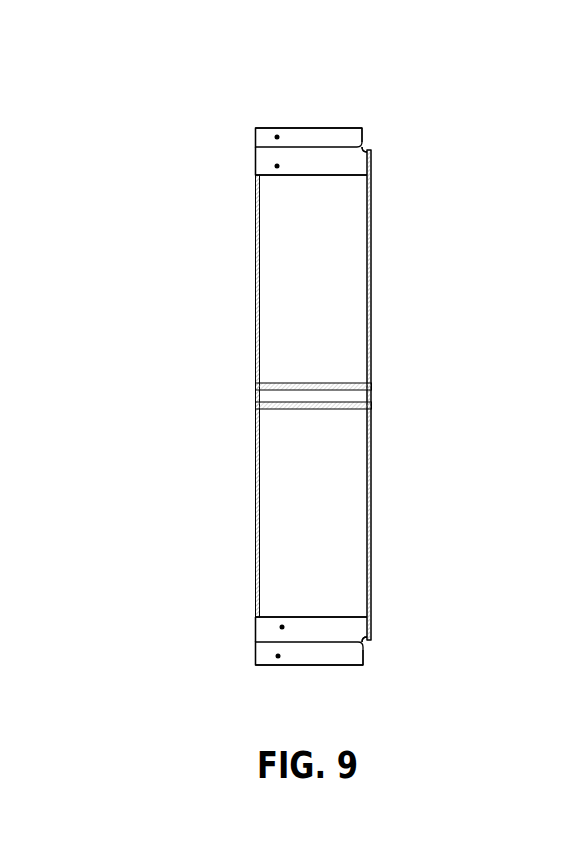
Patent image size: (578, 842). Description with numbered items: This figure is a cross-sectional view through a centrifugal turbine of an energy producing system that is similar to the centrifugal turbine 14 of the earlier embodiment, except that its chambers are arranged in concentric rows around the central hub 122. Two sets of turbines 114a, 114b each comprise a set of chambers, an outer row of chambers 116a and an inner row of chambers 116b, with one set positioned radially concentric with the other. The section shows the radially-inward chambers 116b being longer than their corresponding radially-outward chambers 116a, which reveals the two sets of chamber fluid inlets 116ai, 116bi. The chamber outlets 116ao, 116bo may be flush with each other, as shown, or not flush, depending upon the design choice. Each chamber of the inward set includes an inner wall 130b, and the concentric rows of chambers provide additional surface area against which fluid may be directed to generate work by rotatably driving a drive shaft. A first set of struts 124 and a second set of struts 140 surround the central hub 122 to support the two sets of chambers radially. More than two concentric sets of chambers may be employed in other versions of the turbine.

The centrifugal turbine 14 is at (413, 143).
The first turbine set 114a is at (313, 127).
The second turbine set 114b is at (335, 643).
The outer row of chambers 116a is at (277, 137).
The outer chamber outlet 116ao is at (251, 136).
The outer chamber fluid inlet 116ai is at (363, 127).
The inner row of chambers 116b is at (282, 166).
The inner chamber outlet 116bo is at (251, 166).
The inner chamber fluid inlet 116bi is at (368, 150).
The central hub 122 is at (311, 383).
The first set of struts 124 is at (252, 493).
The inner wall 130b is at (335, 178).
The second set of struts 140 is at (373, 510).